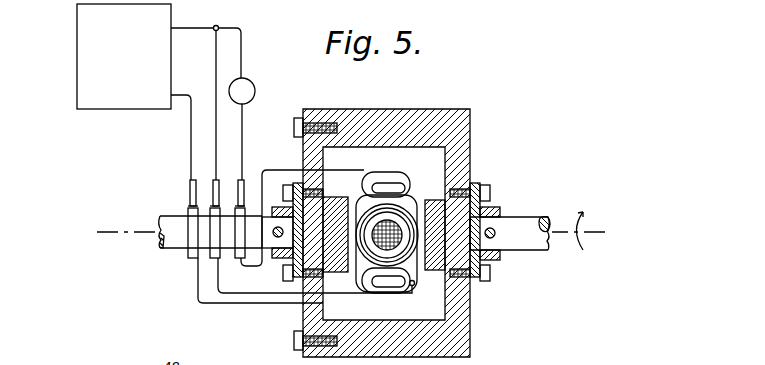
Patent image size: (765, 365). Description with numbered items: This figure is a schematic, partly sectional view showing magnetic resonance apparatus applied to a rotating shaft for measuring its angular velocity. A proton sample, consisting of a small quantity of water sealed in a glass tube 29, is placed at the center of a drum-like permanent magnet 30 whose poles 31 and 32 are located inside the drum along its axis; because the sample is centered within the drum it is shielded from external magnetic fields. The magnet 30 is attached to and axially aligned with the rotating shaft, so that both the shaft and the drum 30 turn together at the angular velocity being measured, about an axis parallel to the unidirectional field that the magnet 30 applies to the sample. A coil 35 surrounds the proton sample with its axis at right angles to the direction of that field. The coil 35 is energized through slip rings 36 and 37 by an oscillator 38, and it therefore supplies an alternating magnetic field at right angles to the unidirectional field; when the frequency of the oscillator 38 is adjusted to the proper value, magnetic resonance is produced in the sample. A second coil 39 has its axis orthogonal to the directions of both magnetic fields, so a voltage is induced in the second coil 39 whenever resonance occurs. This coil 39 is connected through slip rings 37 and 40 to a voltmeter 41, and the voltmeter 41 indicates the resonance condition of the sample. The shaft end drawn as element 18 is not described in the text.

The shaft end 18 is at (381, 245).
The glass tube 29 is at (403, 215).
The permanent magnet 30 is at (428, 108).
The pole 31 is at (351, 198).
The pole 32 is at (427, 204).
The coil 35 is at (364, 200).
The slip ring 36 is at (188, 259).
The slip ring 37 is at (215, 260).
The oscillator 38 is at (77, 80).
The second coil 39 is at (388, 185).
The slip ring 40 is at (239, 263).
The voltmeter 41 is at (255, 82).